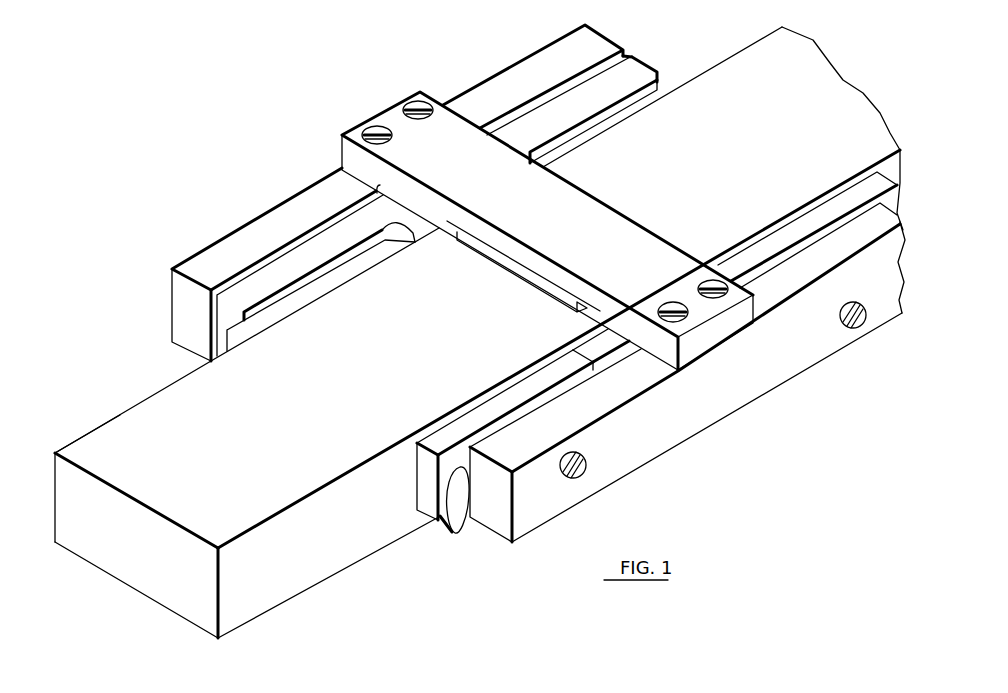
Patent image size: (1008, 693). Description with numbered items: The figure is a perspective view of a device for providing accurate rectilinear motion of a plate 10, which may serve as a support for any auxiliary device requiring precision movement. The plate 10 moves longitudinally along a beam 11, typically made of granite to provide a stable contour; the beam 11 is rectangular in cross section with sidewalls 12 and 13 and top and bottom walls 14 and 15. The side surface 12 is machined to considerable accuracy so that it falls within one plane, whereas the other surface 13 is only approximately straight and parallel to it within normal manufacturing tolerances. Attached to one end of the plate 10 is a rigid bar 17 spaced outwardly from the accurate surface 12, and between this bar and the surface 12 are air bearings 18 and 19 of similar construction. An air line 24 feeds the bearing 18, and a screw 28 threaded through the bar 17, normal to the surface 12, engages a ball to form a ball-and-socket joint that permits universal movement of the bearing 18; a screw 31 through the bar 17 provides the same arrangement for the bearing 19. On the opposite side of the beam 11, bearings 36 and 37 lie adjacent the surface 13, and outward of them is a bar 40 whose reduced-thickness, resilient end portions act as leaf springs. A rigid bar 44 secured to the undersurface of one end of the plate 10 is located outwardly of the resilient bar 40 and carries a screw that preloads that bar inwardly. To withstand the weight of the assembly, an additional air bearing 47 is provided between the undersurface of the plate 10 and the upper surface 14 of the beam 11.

The plate 10 is at (588, 200).
The beam 11 is at (123, 402).
The sidewall 12 is at (267, 595).
The sidewall 13 is at (52, 493).
The top wall 14 is at (200, 390).
The bottom wall 15 is at (128, 588).
The rigid bar 17 is at (640, 450).
The air bearing 18 is at (497, 404).
The air bearing 19 is at (793, 233).
The air line 24 is at (453, 517).
The screw 28 is at (583, 480).
The screw 31 is at (860, 323).
The air bearing 36 is at (300, 302).
The air bearing 37 is at (620, 113).
The resilient bar 40 is at (643, 62).
The rigid bar 44 is at (278, 207).
The air bearing 47 is at (527, 278).